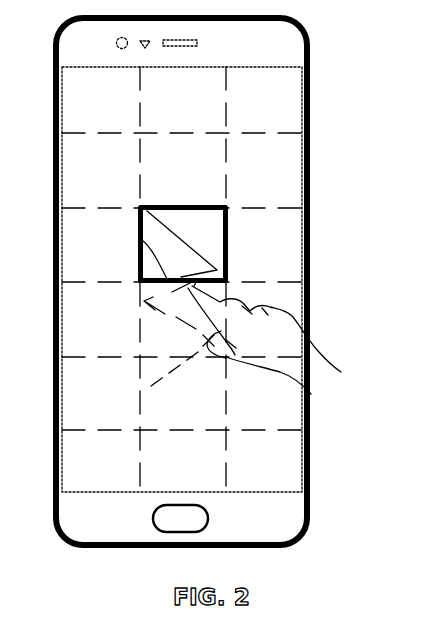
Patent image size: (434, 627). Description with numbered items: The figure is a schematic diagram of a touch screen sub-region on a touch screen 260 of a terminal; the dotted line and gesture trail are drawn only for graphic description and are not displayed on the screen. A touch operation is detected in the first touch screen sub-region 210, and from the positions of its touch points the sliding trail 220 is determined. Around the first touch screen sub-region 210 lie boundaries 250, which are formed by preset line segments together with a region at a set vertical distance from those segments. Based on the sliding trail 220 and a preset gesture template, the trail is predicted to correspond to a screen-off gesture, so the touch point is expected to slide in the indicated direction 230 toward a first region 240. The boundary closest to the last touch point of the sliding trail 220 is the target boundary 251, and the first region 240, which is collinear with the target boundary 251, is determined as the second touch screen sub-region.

The first touch screen sub-region 210 is at (192, 206).
The sliding trail 220 is at (201, 258).
The drag direction arrow 230 is at (147, 304).
The first region 240 is at (158, 350).
The boundaries 250 is at (143, 242).
The target boundary 251 is at (141, 237).
The display screen of terminal 260 is at (269, 268).